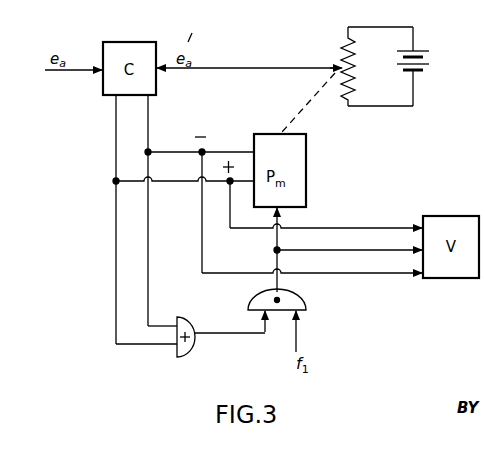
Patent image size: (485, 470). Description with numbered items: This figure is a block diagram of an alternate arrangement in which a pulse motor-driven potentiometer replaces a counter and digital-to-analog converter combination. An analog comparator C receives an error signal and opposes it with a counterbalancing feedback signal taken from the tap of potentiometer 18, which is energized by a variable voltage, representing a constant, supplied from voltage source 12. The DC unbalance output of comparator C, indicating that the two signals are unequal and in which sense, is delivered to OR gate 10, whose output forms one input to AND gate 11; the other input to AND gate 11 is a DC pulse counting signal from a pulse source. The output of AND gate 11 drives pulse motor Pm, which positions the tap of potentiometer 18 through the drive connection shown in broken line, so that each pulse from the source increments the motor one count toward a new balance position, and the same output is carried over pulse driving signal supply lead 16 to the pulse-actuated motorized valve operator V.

The OR gate 10 is at (192, 350).
The AND gate 11 is at (306, 309).
The voltage source 12 is at (429, 62).
The pulse driving signal supply lead 16 is at (335, 248).
The potentiometer 18 is at (343, 42).